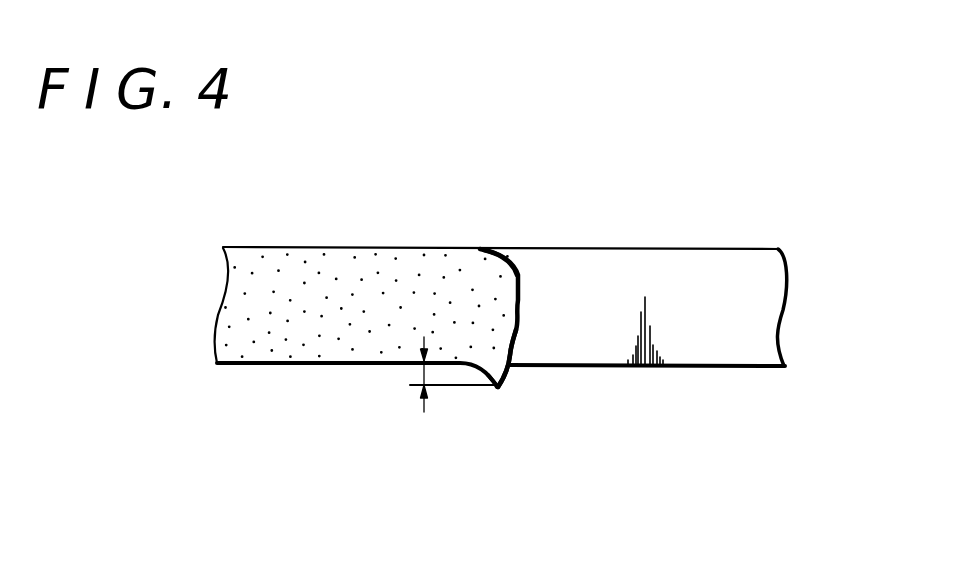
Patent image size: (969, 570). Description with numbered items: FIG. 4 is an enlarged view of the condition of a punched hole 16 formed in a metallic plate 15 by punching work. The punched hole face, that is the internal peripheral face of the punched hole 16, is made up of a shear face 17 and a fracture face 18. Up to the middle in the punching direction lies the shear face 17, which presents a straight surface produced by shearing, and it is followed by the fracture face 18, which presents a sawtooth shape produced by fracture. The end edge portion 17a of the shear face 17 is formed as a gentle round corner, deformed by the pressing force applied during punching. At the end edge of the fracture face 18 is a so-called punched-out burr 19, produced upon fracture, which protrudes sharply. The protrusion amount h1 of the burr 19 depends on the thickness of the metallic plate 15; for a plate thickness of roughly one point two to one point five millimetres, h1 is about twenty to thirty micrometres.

The metallic plate 15 is at (358, 247).
The punched hole 16 is at (688, 293).
The shear face 17 is at (521, 285).
The end edge portion of the shear face 17a is at (514, 255).
The fracture face 18 is at (513, 347).
The punched-out burr 19 is at (499, 400).
The protrusion amount of the burr h1 is at (423, 373).